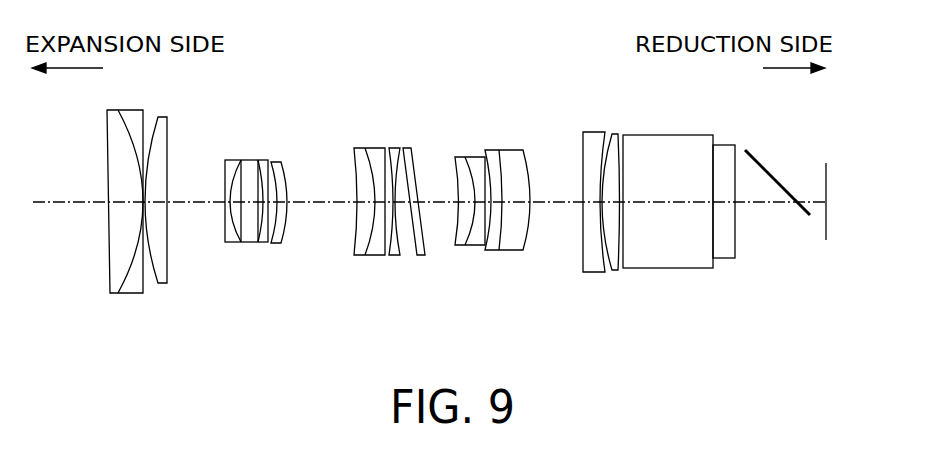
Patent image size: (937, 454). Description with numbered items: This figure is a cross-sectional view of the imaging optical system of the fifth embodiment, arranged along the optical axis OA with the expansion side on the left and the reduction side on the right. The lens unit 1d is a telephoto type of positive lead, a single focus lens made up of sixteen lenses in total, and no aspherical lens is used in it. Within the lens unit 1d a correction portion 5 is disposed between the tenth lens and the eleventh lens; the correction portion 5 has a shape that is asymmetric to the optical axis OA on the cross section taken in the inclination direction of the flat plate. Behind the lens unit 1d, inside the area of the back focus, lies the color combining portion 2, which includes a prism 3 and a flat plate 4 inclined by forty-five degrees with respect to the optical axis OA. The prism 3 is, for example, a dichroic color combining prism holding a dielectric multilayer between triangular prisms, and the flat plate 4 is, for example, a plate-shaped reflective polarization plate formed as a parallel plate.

The optical axis OA is at (60, 201).
The lens unit 1d is at (359, 214).
The color combining portion 2 is at (725, 214).
The prism 3 is at (656, 148).
The flat plate 4 is at (767, 171).
The correction portion 5 is at (435, 169).